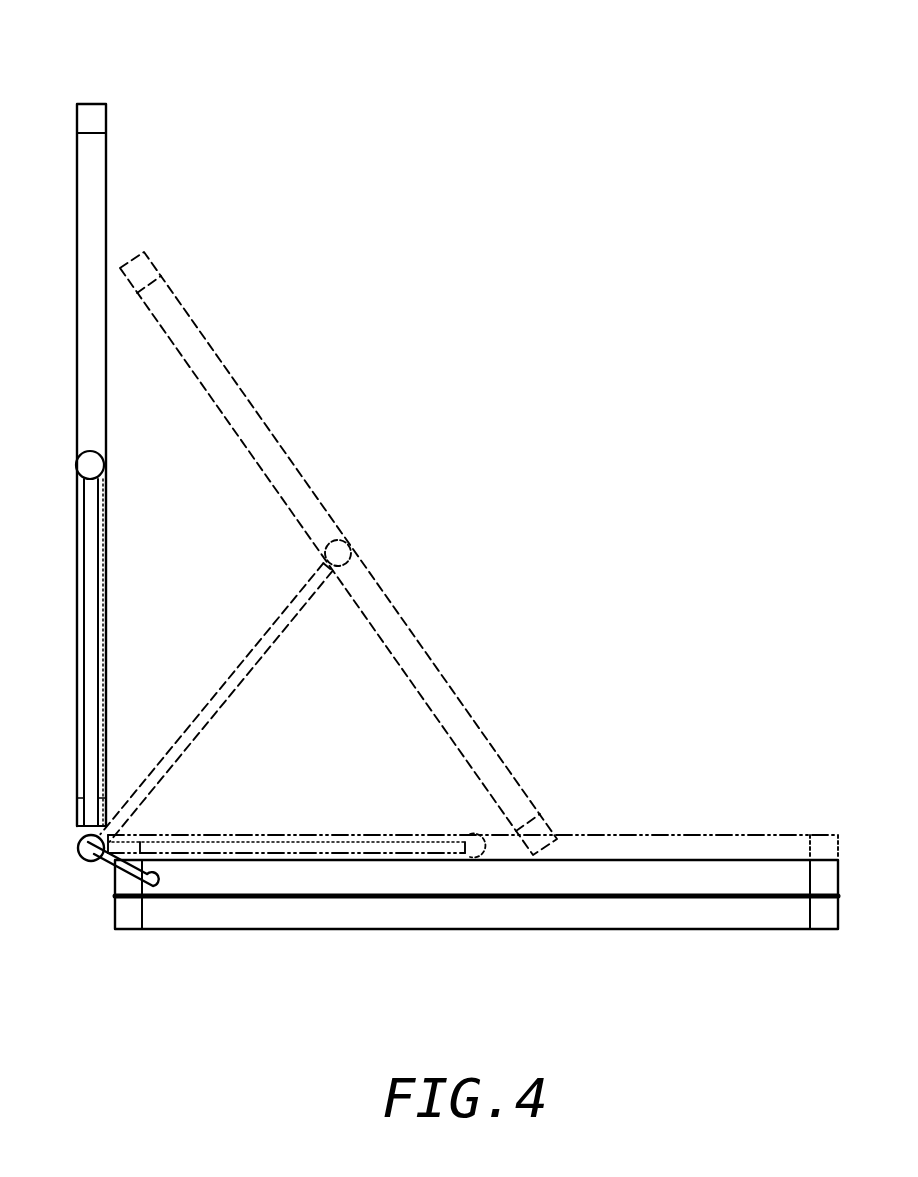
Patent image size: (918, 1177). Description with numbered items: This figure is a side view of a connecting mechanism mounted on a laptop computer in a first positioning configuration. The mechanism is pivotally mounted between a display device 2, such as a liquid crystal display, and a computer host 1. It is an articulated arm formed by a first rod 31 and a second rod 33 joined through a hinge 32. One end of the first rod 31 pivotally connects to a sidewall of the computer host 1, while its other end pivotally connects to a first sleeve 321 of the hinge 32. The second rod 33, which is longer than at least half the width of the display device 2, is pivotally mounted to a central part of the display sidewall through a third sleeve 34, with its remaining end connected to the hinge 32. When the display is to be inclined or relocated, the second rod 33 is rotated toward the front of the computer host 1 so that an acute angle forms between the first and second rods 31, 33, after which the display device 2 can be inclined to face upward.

The computer host 1 is at (533, 913).
The display device 2 is at (87, 122).
The first rod 31 is at (118, 868).
The hinge 32 is at (56, 908).
The first sleeve 321 is at (88, 851).
The second rod 33 is at (91, 612).
The third sleeve 34 is at (94, 464).